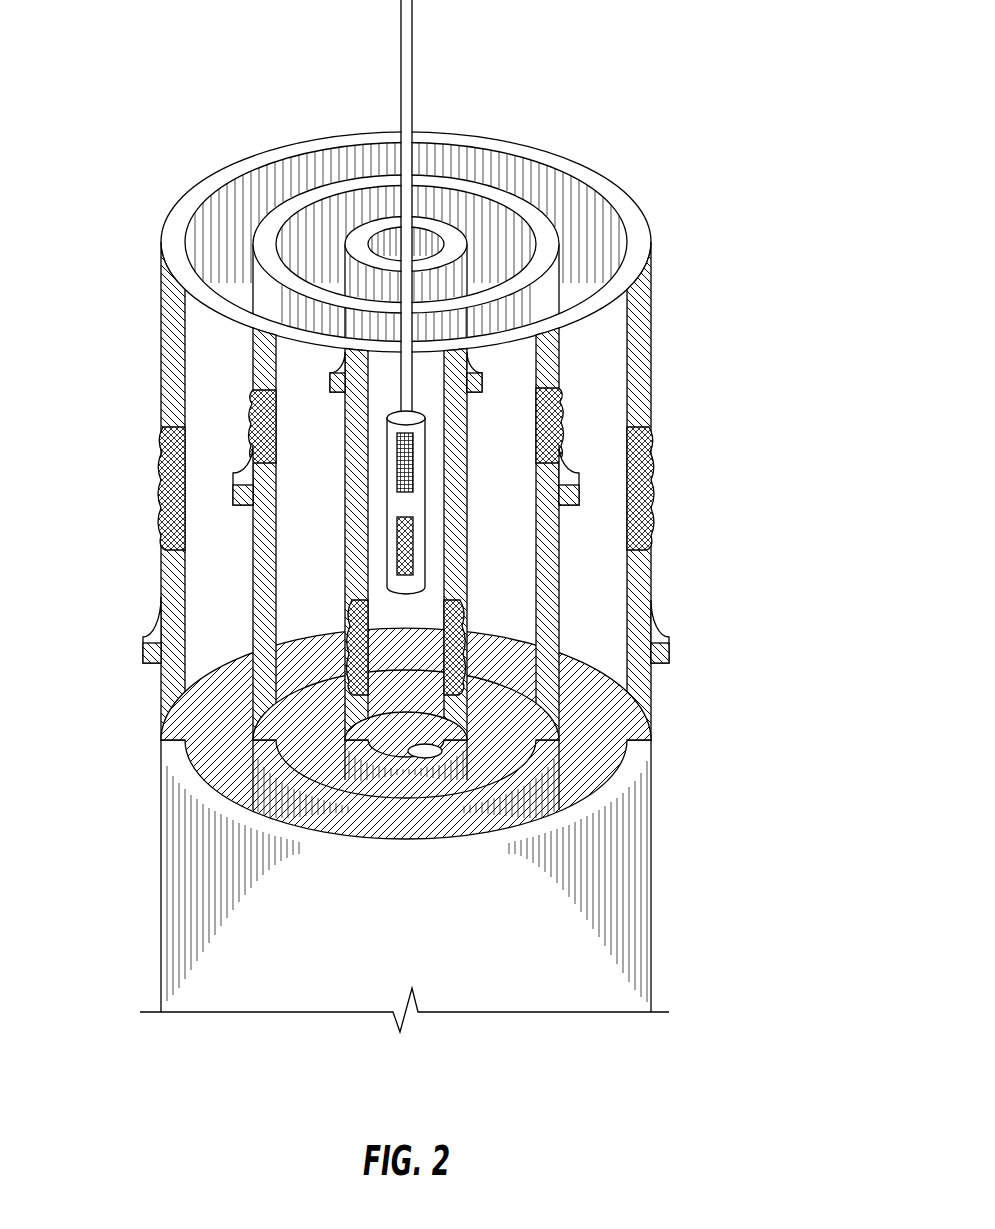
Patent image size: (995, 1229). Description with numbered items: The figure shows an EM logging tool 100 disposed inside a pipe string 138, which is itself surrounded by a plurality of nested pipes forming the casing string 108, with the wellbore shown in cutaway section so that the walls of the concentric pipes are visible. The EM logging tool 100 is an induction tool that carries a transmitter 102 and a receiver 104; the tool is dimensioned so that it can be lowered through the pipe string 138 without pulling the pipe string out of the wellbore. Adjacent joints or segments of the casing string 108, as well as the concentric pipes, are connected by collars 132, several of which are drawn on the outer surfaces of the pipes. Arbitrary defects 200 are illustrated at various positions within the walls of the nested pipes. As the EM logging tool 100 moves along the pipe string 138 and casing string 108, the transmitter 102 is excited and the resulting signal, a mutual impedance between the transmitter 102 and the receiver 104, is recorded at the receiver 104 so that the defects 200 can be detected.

The EM logging tool 100 is at (415, 502).
The transmitter 102 is at (408, 455).
The receiver 104 is at (408, 552).
The casing string 108 is at (749, 558).
The collar 132 is at (240, 493).
The pipe string 138 is at (460, 748).
The defects 200 is at (260, 408).